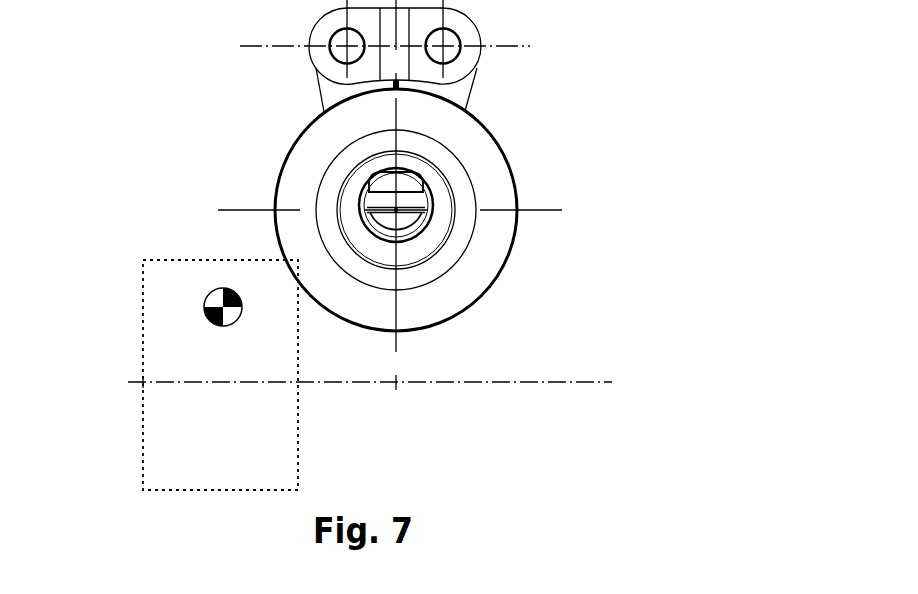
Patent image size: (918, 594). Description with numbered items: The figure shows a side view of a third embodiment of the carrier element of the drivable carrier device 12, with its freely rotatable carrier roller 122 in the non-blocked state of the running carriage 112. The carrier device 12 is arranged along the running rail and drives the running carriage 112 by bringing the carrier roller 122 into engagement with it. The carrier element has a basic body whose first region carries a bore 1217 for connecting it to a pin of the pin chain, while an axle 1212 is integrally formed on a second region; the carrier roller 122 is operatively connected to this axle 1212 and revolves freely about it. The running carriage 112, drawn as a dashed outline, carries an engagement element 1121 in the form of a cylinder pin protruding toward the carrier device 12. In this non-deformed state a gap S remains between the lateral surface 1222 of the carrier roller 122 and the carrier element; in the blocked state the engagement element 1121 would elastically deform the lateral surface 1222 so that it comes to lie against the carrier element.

The carrier device 12 is at (383, 176).
The running carriage 112 is at (163, 375).
The engagement element 1121 is at (217, 300).
The freely rotatable carrier roller 122 is at (418, 210).
The axle 1212 is at (397, 210).
The bore 1217 is at (448, 53).
The lateral surface 1222 is at (515, 239).
The gap S is at (394, 84).